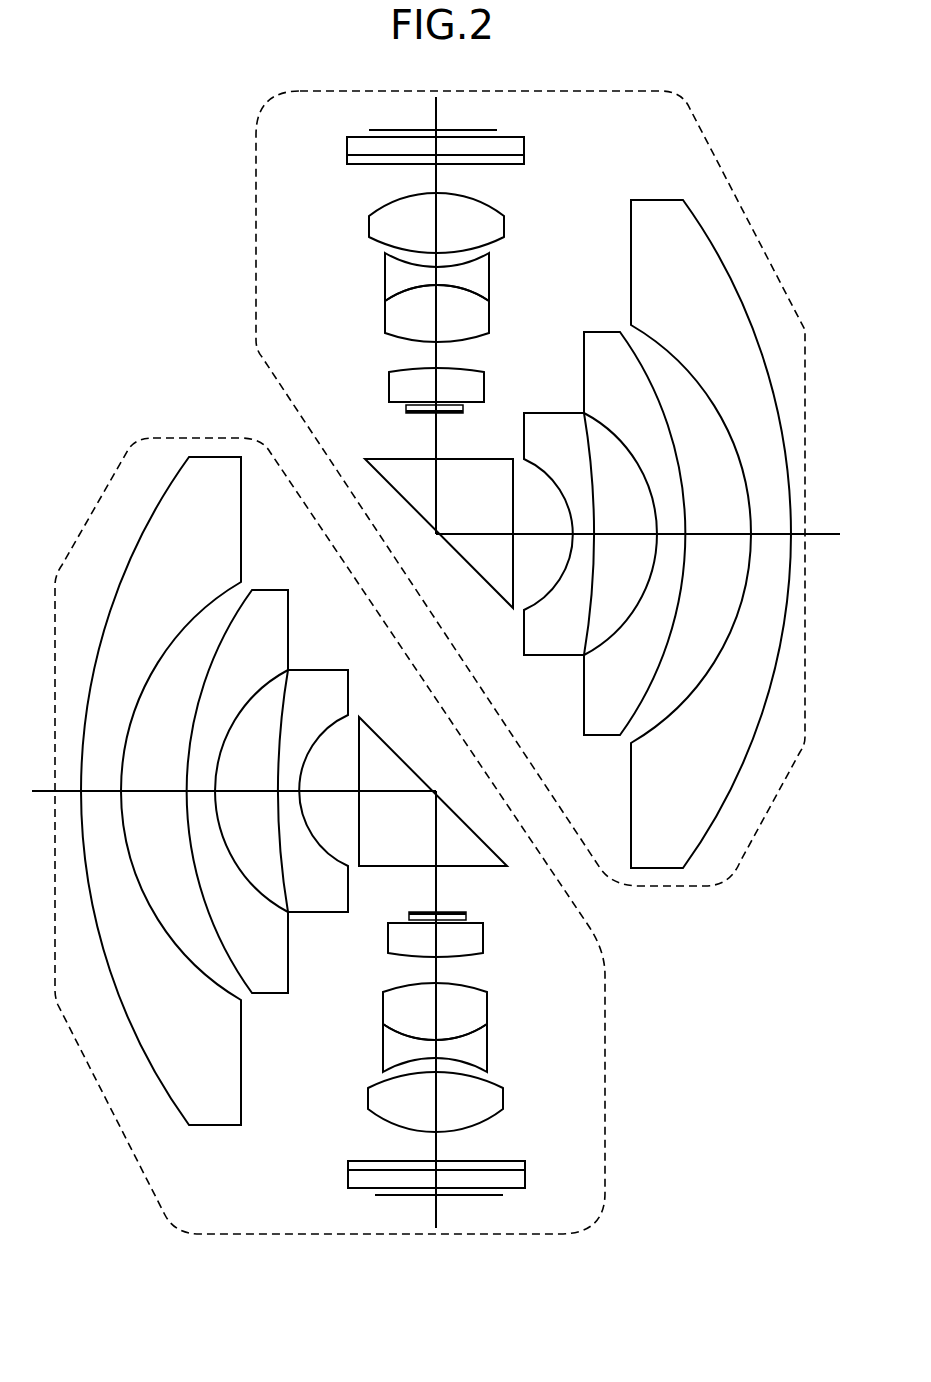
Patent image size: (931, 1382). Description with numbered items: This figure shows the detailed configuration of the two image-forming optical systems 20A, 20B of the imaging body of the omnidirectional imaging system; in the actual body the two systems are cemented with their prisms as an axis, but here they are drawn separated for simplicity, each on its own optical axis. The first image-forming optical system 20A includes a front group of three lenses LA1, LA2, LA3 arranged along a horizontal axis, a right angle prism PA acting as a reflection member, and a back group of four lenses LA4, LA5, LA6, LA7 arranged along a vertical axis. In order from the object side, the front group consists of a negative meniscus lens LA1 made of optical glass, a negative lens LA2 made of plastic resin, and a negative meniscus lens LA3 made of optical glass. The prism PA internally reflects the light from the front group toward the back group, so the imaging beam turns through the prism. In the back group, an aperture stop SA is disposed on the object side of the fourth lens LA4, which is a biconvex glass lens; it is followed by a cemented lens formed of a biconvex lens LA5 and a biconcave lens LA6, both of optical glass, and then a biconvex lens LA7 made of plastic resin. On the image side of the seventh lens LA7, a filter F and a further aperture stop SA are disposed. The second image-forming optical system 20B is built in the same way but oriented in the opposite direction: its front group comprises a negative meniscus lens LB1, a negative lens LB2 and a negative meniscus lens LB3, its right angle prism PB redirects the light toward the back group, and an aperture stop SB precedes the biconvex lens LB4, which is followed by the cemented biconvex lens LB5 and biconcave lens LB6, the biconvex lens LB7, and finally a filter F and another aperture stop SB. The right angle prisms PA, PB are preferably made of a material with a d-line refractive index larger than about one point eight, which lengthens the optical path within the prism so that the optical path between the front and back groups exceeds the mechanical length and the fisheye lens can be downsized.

The first image-forming optical system 20A is at (605, 1073).
The second image-forming optical system 20B is at (655, 887).
The negative meniscus lens LA1 is at (220, 1126).
The negative lens LA2 is at (272, 995).
The negative meniscus lens LA3 is at (318, 913).
The biconvex lens LA4 is at (484, 936).
The biconvex lens LA5 is at (487, 1003).
The biconcave lens LA6 is at (487, 1045).
The biconvex lens LA7 is at (503, 1093).
The negative meniscus lens LB1 is at (652, 200).
The negative lens LB2 is at (598, 333).
The negative meniscus lens LB3 is at (545, 412).
The biconvex lens LB4 is at (389, 385).
The biconvex lens LB5 is at (384, 318).
The biconcave lens LB6 is at (384, 275).
The biconvex lens LB7 is at (368, 228).
The right angle prism PA is at (378, 866).
The right angle prism PB is at (492, 459).
The aperture stop SA is at (467, 914).
The aperture stop SB is at (405, 409).
The filter F is at (525, 1175).